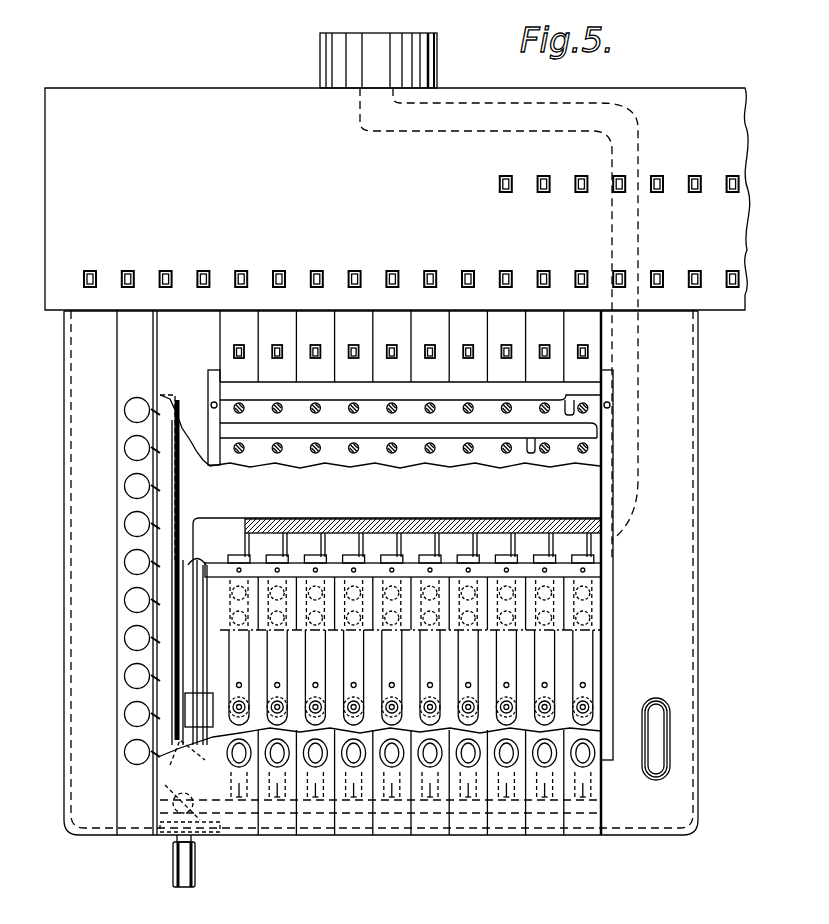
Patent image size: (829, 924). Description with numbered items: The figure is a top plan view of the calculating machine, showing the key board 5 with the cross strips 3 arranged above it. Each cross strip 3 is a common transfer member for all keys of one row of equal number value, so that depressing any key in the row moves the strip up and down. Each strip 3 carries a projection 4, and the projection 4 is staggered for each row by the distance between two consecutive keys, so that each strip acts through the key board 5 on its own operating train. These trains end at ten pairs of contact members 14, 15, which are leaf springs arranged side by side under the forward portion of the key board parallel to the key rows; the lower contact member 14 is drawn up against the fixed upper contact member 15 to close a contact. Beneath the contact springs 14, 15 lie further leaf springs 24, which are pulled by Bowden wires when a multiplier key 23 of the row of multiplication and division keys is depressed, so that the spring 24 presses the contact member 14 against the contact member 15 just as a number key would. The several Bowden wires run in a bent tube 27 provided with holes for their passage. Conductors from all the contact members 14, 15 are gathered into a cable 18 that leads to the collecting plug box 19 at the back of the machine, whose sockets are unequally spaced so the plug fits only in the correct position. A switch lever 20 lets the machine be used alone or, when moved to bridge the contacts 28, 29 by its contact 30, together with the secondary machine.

The collecting plug box 19 is at (437, 60).
The cross strip 3 is at (444, 385).
The projection 4 is at (569, 403).
The key board 5 is at (210, 436).
The multiplier key 23 is at (126, 484).
The cable 18 is at (600, 524).
The contact 29 is at (199, 563).
The bent tube 27 is at (155, 578).
The contact member 15 is at (234, 668).
The contact member 14 is at (345, 706).
The contact 28 is at (208, 782).
The contact 30 is at (205, 806).
The spring 24 is at (592, 782).
The switch lever 20 is at (196, 867).